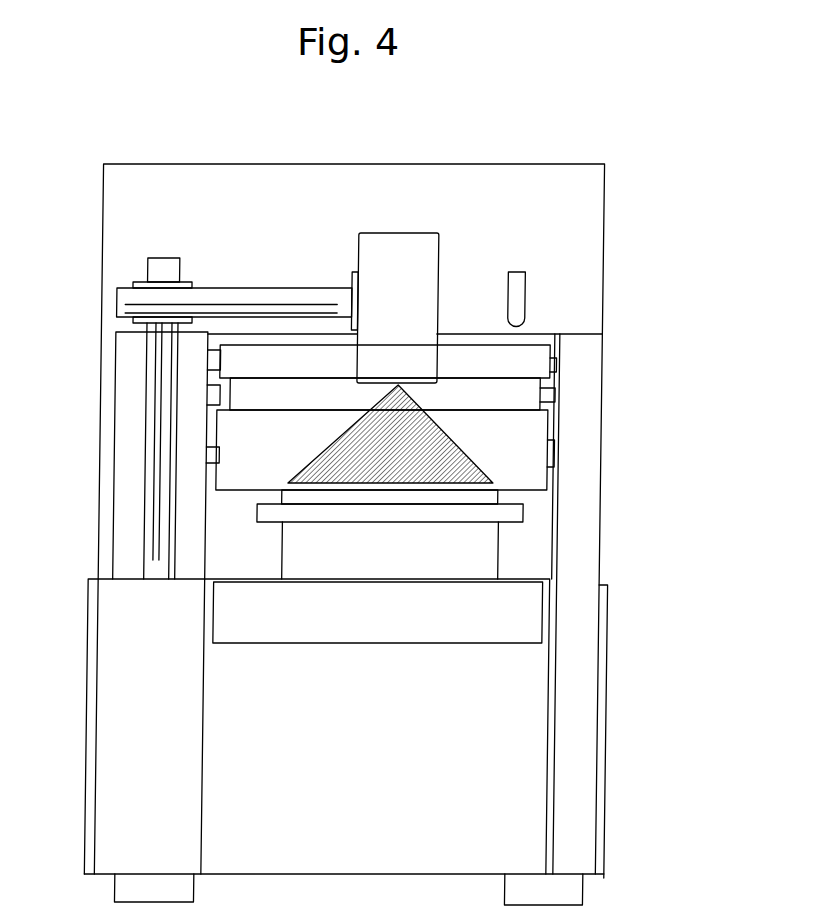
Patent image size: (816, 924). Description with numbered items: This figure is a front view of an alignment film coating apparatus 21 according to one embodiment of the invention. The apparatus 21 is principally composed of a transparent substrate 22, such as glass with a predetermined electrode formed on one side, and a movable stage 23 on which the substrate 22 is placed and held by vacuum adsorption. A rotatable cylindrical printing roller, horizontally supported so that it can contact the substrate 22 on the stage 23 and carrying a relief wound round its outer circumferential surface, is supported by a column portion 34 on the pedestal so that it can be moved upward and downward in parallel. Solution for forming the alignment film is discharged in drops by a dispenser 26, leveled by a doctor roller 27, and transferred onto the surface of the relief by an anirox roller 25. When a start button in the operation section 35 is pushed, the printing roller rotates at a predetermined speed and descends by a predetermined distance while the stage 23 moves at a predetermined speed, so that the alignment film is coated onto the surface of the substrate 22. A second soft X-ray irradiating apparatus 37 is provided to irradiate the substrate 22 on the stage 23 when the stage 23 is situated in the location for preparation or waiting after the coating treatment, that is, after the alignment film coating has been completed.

The alignment film coating apparatus 21 is at (158, 164).
The transparent substrate 22 is at (503, 500).
The movable stage 23 is at (527, 520).
The anirox roller 25 is at (530, 400).
The dispenser 26 is at (515, 282).
The doctor roller 27 is at (543, 365).
The column portion 34 is at (122, 500).
The operation section 35 is at (396, 631).
The second soft X-ray irradiating apparatus 37 is at (418, 260).